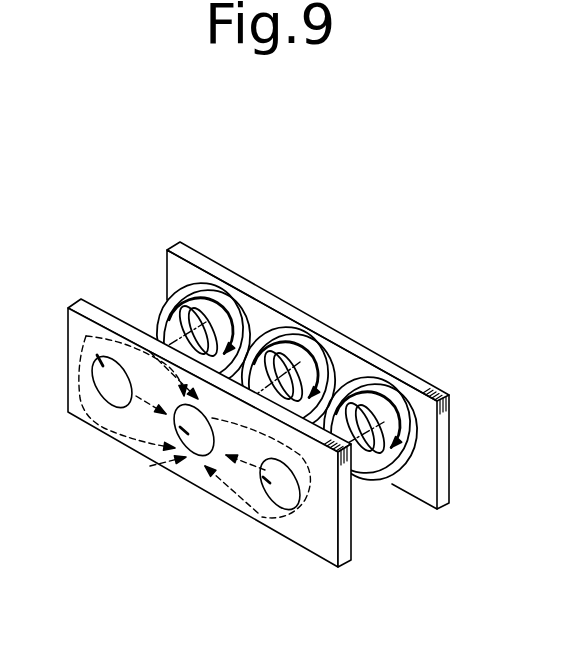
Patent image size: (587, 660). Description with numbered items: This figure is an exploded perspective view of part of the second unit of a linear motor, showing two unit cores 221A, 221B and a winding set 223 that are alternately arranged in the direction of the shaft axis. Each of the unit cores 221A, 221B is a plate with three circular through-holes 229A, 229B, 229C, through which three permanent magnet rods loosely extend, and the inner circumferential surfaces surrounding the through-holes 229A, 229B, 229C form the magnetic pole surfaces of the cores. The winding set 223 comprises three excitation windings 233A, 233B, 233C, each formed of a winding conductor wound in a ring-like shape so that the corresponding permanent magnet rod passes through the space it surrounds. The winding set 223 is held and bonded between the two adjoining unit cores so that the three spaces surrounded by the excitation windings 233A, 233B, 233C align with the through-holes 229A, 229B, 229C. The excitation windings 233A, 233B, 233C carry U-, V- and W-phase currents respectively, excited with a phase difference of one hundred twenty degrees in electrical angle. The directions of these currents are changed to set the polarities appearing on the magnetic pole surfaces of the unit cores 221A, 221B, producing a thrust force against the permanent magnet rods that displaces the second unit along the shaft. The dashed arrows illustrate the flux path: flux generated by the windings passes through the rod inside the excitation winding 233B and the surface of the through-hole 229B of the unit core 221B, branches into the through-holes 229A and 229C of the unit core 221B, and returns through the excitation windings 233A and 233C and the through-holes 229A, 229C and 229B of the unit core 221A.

The unit core 221A is at (322, 543).
The unit core 221B is at (417, 480).
The winding set 223 is at (430, 191).
The through-hole 229A is at (105, 396).
The through-hole 229B is at (192, 457).
The through-hole 229C is at (272, 495).
The excitation winding 233A is at (207, 287).
The excitation winding 233B is at (284, 328).
The excitation winding 233C is at (369, 380).